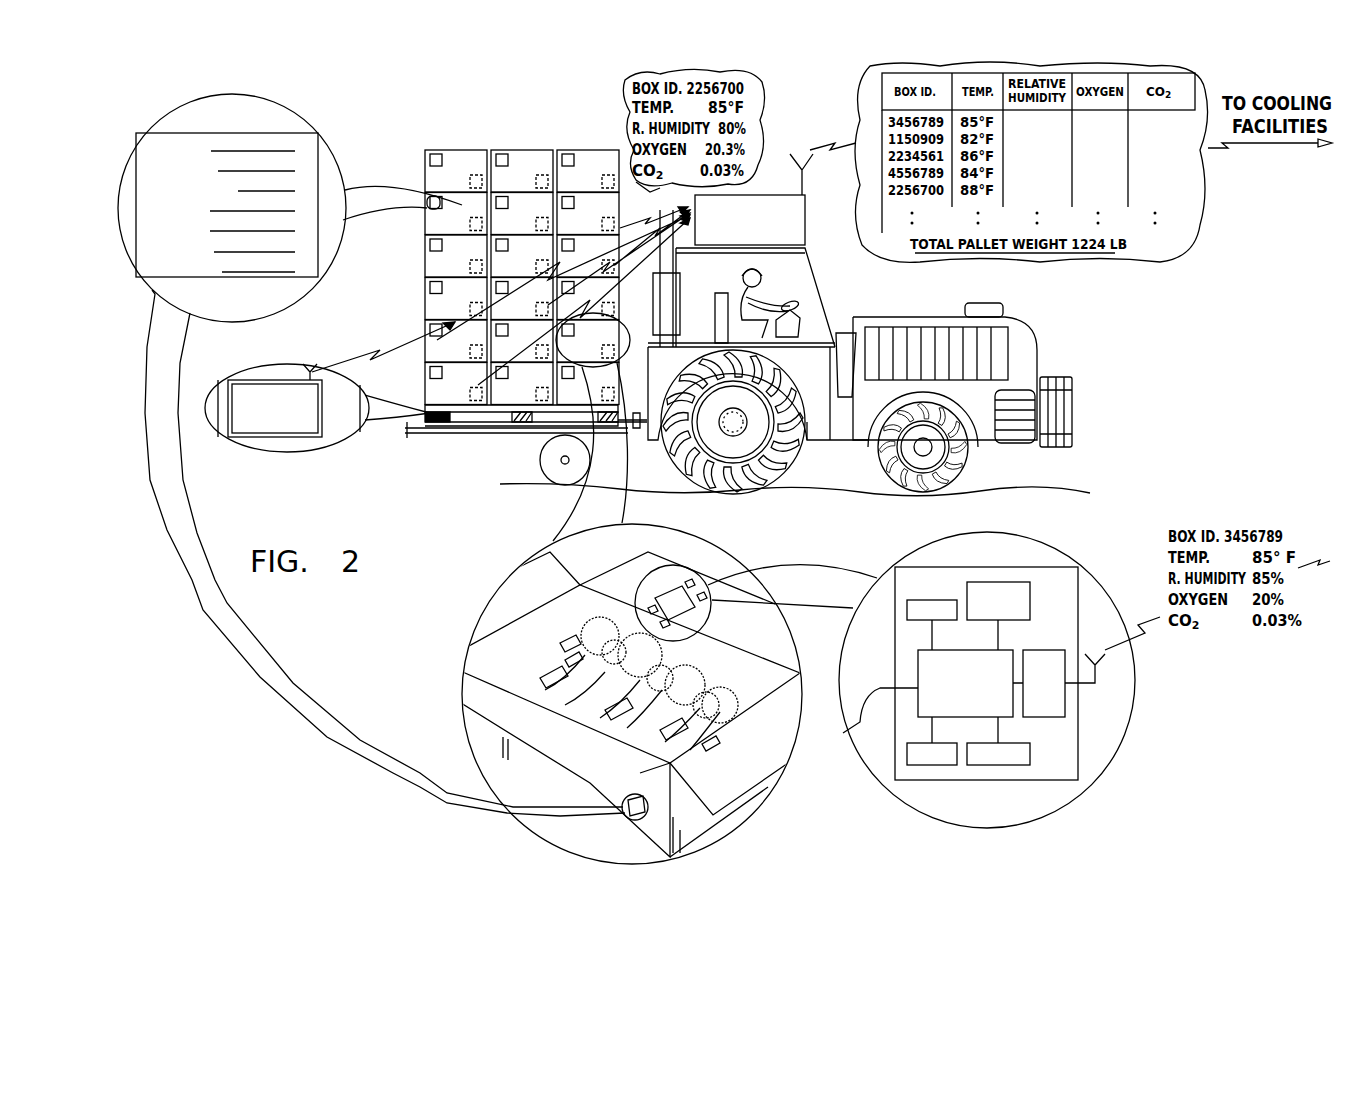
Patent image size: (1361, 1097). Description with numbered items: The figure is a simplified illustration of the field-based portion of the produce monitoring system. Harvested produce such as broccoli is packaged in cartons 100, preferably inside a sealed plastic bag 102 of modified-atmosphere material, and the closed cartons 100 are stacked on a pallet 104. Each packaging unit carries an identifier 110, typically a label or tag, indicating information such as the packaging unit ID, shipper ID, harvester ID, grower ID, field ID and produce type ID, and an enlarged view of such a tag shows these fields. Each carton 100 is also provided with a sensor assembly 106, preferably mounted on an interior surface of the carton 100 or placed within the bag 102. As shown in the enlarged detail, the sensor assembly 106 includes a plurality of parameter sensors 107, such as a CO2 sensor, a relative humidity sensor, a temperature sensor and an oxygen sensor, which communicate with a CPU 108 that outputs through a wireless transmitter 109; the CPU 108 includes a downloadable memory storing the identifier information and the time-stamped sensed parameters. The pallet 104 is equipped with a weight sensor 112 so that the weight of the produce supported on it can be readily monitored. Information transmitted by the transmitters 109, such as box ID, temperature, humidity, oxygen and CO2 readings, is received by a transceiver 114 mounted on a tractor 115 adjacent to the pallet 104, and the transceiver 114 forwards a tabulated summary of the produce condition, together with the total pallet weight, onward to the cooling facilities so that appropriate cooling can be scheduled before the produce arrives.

The carton 100 is at (452, 172).
The sealed plastic bag 102 is at (690, 665).
The pallet 104 is at (515, 425).
The sensor assembly 106 is at (470, 310).
The parameter sensors 107 is at (972, 582).
The CPU 108 is at (862, 717).
The wireless transmitter 109 is at (1065, 708).
The identifier 110 is at (316, 135).
The weight sensor 112 is at (312, 432).
The transceiver 114 is at (805, 222).
The tractor 115 is at (905, 320).